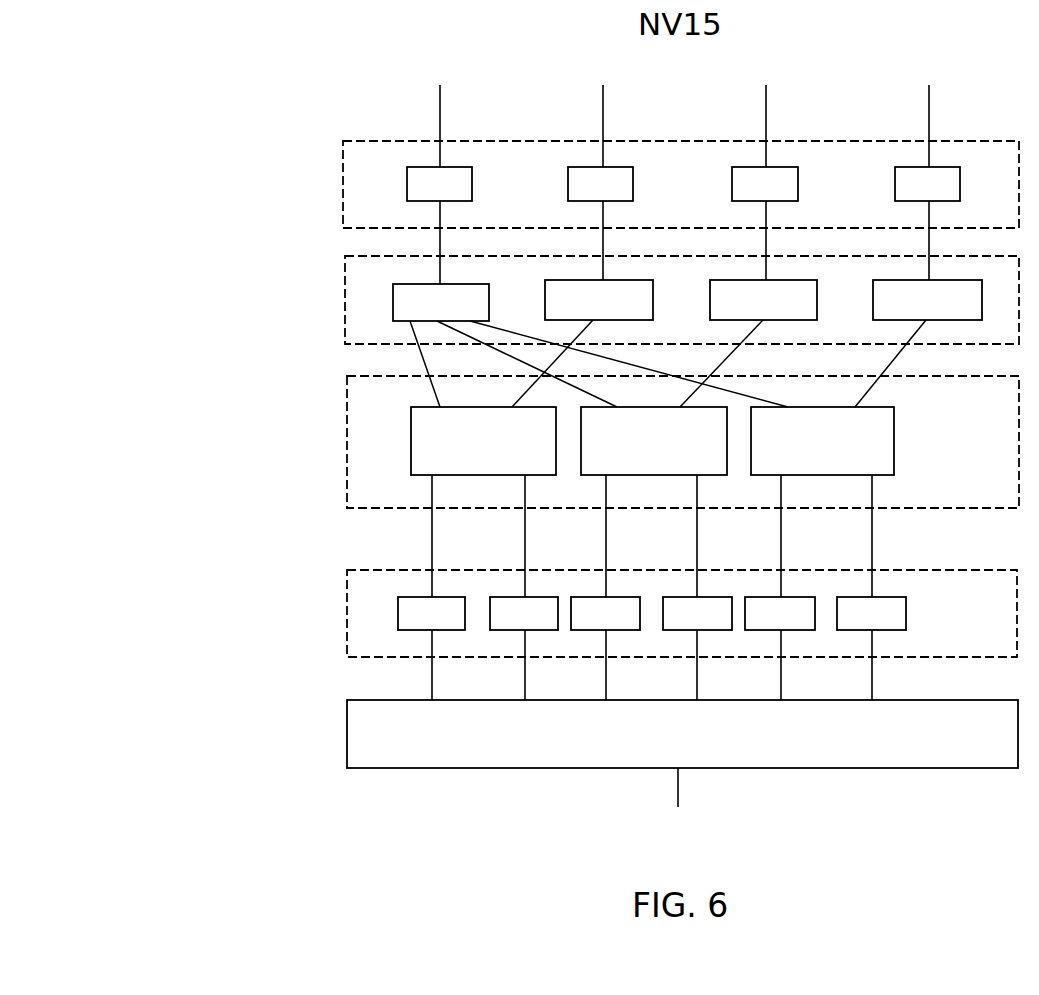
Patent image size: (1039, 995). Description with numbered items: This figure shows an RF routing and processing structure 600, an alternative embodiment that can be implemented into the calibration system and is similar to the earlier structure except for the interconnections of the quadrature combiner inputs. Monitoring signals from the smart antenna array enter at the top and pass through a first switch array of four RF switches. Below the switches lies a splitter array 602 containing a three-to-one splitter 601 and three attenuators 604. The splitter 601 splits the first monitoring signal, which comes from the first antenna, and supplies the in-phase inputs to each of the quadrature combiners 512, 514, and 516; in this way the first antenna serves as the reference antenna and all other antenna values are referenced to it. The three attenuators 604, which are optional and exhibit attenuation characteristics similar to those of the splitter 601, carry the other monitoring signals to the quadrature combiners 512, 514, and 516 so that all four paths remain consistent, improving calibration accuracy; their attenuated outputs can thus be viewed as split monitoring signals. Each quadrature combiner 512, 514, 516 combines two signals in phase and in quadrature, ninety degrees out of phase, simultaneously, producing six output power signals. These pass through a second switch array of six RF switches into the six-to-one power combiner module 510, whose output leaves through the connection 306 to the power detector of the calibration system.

The RF routing and processing structure 600 is at (187, 78).
The splitter array 602 is at (340, 282).
The 3:1 splitter 601 is at (478, 280).
The attenuator 604 is at (780, 273).
The quadrature combiner 512 is at (483, 441).
The quadrature combiner 514 is at (654, 441).
The quadrature combiner 516 is at (822, 441).
The 6:1 power combiner module 510 is at (682, 734).
The connection 306 is at (672, 791).